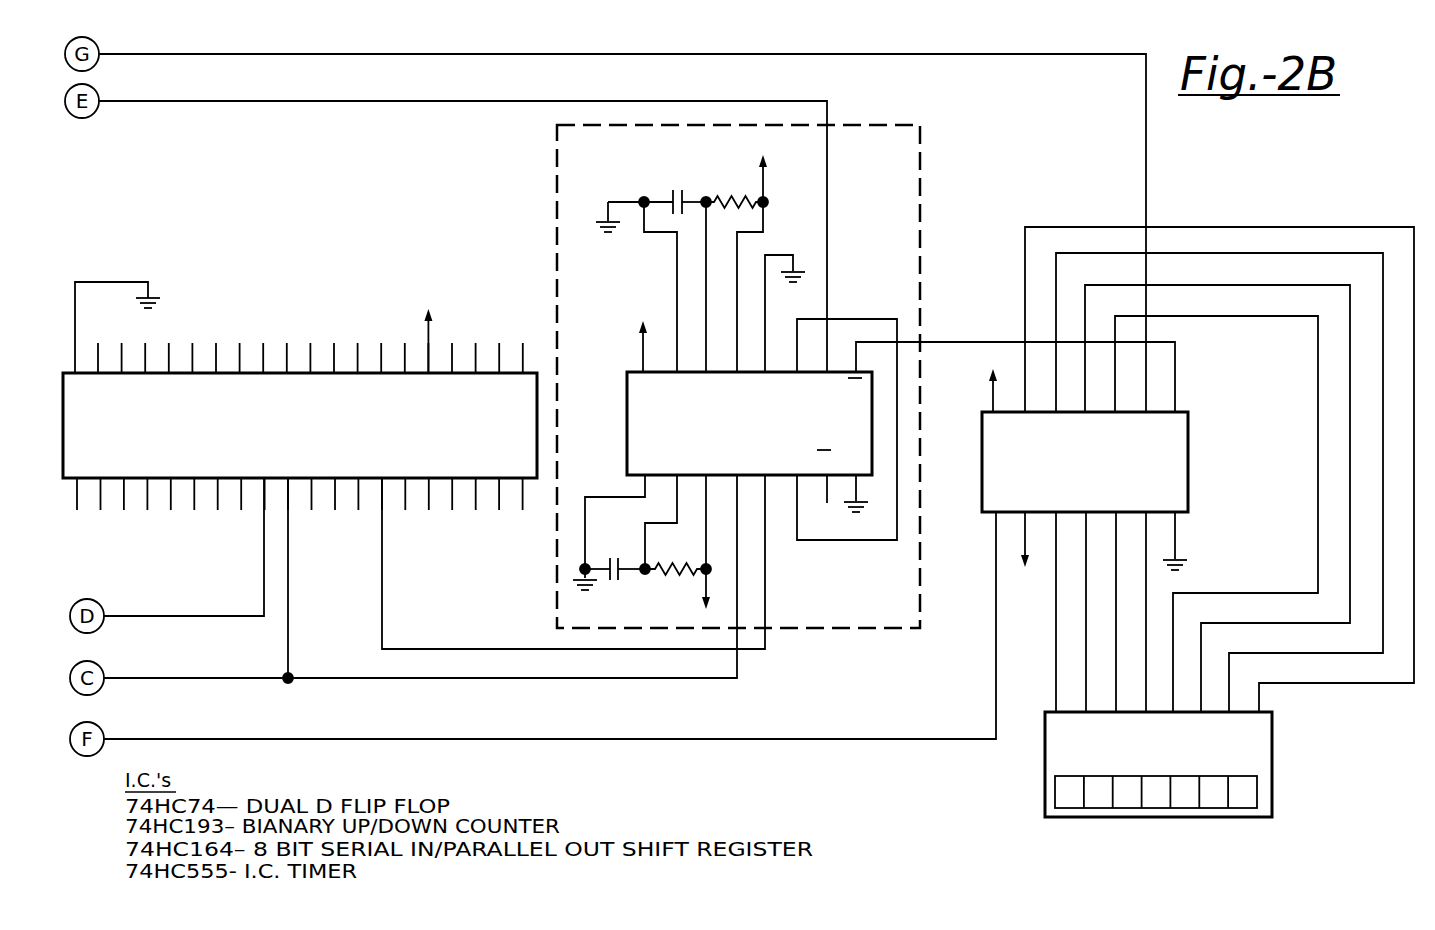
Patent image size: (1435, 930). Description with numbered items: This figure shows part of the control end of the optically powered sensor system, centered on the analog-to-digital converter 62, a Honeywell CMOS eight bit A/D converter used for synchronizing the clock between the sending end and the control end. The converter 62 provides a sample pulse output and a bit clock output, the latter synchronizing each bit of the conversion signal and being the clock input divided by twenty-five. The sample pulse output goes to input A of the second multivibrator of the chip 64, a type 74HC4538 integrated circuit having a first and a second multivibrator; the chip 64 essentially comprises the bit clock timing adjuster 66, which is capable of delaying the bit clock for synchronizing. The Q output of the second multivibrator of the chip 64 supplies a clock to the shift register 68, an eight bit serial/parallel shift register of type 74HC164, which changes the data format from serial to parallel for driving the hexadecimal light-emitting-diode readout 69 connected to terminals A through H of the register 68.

The analog-to-digital converter 62 is at (536, 372).
The chip 64 is at (627, 398).
The bit clock timing adjuster 66 is at (921, 273).
The shift register 68 is at (982, 486).
The hexadecimal light-emitting-diode readout 69 is at (1045, 802).